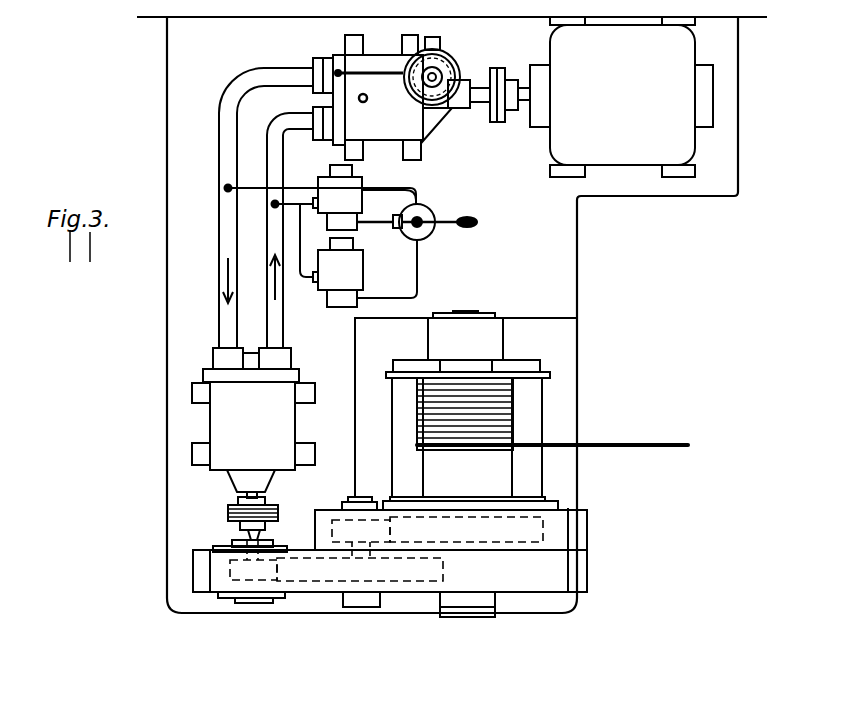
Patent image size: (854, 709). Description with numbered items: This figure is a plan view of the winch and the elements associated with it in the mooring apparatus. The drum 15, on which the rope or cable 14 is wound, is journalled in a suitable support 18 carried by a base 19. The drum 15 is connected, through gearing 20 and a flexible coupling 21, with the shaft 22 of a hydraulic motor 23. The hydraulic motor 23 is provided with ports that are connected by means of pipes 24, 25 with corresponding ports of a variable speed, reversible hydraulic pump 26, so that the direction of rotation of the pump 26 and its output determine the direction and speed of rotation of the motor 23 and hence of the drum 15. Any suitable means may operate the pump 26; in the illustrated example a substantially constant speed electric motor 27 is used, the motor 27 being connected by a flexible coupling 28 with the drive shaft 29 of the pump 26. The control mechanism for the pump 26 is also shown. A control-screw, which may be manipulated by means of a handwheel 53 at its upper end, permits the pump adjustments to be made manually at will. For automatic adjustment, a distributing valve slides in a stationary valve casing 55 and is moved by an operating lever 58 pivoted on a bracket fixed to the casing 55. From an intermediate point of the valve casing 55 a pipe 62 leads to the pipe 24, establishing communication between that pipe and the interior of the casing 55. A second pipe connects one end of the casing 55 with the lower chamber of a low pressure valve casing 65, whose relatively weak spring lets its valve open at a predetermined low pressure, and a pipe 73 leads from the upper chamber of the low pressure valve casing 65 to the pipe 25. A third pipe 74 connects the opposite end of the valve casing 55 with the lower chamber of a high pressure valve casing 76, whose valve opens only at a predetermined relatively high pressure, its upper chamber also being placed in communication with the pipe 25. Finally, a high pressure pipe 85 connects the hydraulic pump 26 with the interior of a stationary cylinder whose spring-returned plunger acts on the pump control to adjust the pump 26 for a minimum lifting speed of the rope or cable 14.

The rope or cable 14 is at (650, 442).
The drum 15 is at (498, 478).
The support 18 is at (518, 317).
The base 19 is at (565, 248).
The gearing 20 is at (267, 580).
The flexible coupling 21 is at (230, 513).
The shaft 22 is at (238, 498).
The hydraulic motor 23 is at (253, 420).
The pipe 24 is at (220, 225).
The pipe 25 is at (277, 325).
The variable speed, reversible hydraulic pump 26 is at (368, 97).
The electric motor 27 is at (631, 97).
The flexible coupling 28 is at (502, 123).
The drive shaft 29 is at (475, 88).
The handwheel 53 is at (452, 107).
The valve casing 55 is at (425, 235).
The operating lever 58 is at (443, 218).
The pipe 62 is at (413, 183).
The low pressure valve casing 65 is at (355, 200).
The pipe 73 is at (288, 200).
The pipe 74 is at (420, 282).
The high pressure valve casing 76 is at (357, 268).
The high pressure pipe 85 is at (352, 73).